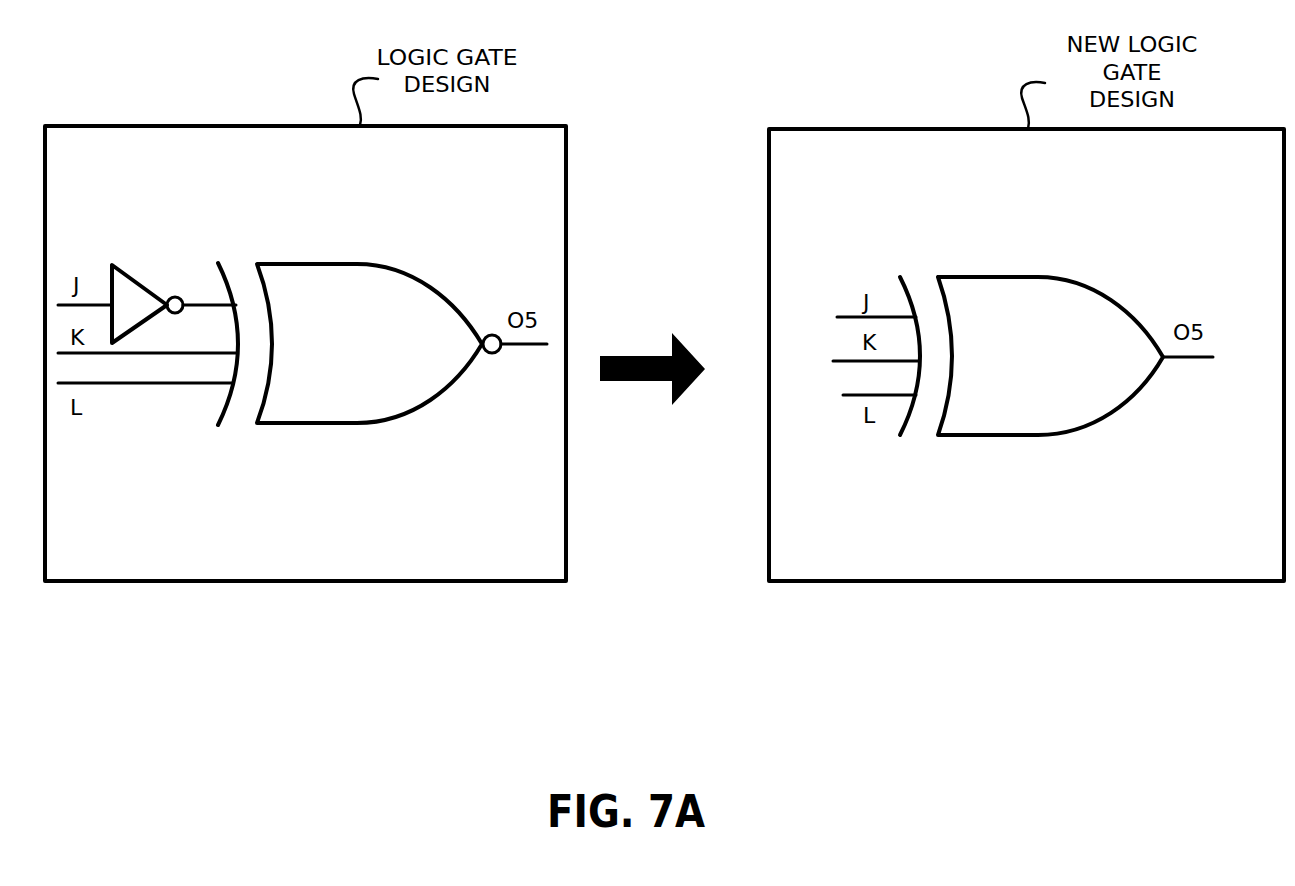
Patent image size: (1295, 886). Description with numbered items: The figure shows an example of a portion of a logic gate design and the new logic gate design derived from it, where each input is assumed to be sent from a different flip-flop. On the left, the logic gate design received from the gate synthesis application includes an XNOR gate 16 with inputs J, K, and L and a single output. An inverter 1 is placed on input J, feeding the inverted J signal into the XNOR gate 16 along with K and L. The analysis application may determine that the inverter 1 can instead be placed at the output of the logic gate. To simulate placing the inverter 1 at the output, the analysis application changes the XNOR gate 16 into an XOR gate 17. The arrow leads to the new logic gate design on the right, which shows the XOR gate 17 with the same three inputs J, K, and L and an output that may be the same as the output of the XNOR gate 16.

The inverter 1 is at (137, 273).
The XNOR gate 16 is at (355, 423).
The XOR gate 17 is at (1038, 435).